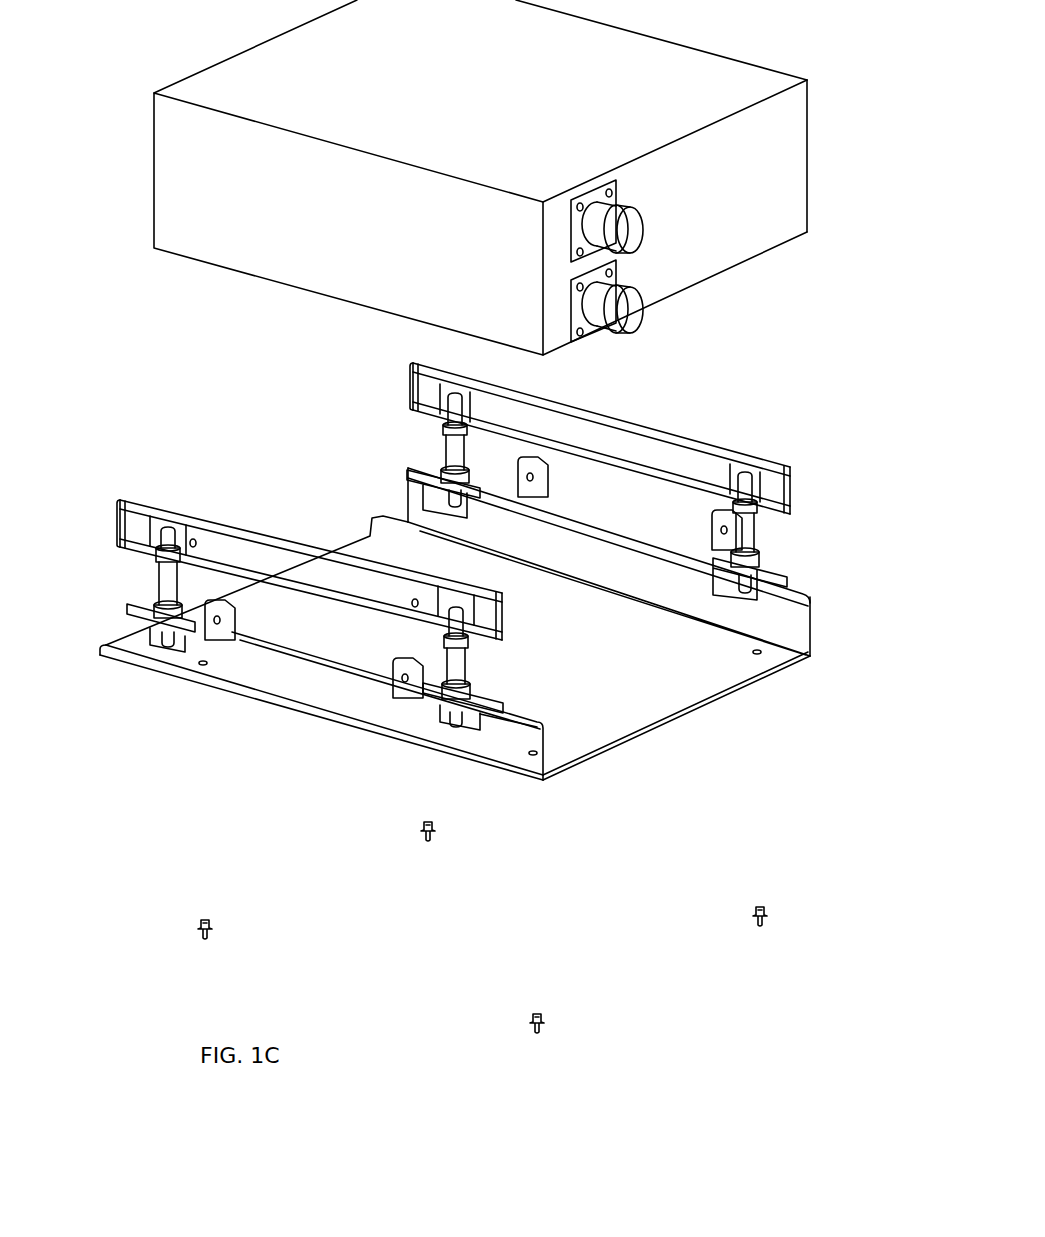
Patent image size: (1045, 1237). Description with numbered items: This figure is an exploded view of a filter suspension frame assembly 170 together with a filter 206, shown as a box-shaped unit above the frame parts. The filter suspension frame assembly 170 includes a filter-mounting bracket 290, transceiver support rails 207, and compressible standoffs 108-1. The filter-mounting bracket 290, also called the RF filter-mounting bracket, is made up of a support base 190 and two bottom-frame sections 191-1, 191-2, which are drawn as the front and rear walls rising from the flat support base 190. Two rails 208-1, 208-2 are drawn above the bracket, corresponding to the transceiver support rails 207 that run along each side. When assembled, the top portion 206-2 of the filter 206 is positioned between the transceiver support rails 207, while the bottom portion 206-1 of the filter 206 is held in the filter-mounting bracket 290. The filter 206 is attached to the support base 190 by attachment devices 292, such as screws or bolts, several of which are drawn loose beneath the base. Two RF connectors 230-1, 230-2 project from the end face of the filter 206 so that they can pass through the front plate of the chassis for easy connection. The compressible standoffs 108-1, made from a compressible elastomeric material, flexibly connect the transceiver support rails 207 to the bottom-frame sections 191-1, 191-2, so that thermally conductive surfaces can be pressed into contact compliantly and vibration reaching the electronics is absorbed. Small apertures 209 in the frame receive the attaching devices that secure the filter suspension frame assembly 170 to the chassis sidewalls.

The filter 206 is at (722, 254).
The bottom portion of the filter 206-1 is at (810, 178).
The top portion of the filter 206-2 is at (810, 80).
The RF connector 230-1 is at (636, 231).
The RF connector 230-2 is at (632, 307).
The transceiver support rails 207 is at (418, 367).
The first rail 208-1 is at (283, 533).
The second rail 208-2 is at (641, 424).
The compressible standoffs 108-1 is at (452, 465).
The apertures 209 is at (535, 476).
The filter suspension frame assembly 170 is at (828, 363).
The support base 190 is at (672, 700).
The bottom-frame section 191-1 is at (284, 697).
The bottom-frame section 191-2 is at (677, 598).
The filter-mounting bracket 290 is at (508, 755).
The attachment devices 292 is at (436, 834).